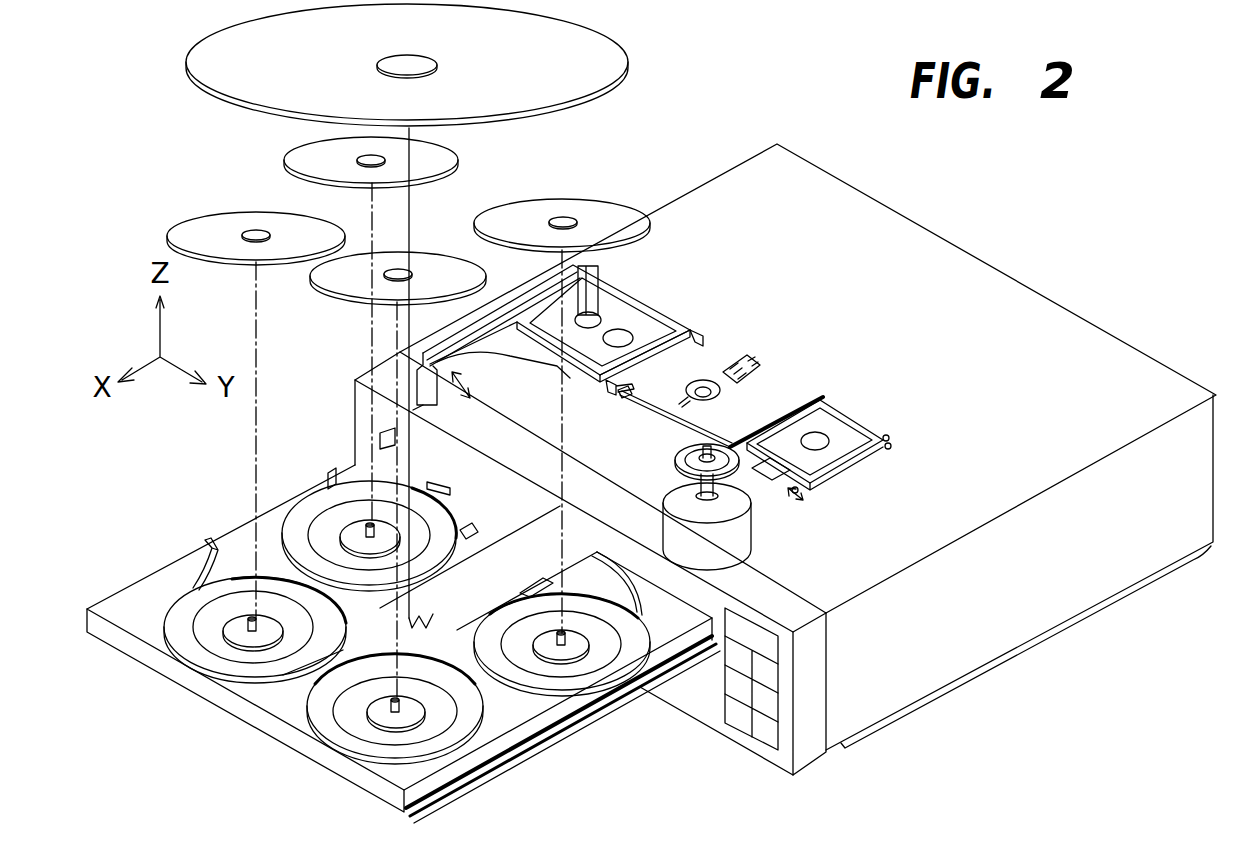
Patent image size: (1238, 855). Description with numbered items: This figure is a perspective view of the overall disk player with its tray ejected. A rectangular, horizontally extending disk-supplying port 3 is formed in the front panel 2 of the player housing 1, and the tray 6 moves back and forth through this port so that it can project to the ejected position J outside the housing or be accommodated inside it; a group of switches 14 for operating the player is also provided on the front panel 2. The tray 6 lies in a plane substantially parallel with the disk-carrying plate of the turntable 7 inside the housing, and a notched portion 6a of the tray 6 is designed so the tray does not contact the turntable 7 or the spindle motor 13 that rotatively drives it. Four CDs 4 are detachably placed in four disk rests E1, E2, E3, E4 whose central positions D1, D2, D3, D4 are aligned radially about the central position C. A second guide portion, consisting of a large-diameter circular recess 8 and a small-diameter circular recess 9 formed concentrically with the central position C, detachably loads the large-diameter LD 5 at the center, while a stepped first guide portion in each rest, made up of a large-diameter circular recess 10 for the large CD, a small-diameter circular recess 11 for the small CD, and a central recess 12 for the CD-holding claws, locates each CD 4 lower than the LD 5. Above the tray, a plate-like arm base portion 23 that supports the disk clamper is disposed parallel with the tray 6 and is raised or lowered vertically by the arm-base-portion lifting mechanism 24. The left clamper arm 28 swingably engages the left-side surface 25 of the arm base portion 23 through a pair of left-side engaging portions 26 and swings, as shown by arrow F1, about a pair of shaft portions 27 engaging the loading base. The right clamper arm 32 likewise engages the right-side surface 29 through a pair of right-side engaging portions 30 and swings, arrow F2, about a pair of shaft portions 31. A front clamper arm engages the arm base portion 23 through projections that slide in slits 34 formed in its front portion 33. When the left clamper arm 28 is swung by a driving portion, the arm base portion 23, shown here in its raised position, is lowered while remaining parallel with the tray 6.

The player housing 1 is at (1027, 627).
The front panel 2 is at (690, 708).
The disk-supplying port 3 is at (388, 428).
The CD 4 is at (200, 227).
The LD 5 is at (598, 88).
The tray 6 is at (378, 795).
The notched portion 6a is at (498, 580).
The turntable 7 is at (688, 470).
The large-diameter circular recess 8 is at (210, 557).
The small-diameter circular recess 9 is at (545, 735).
The large-diameter circular recess 10 is at (165, 625).
The small-diameter circular recess 11 is at (178, 624).
The central recess 12 is at (228, 632).
The spindle motor 13 is at (743, 545).
The group of switches 14 is at (767, 739).
The arm base portion 23 is at (750, 366).
The arm-base-portion lifting mechanism 24 is at (652, 275).
The left-side surface 25 is at (663, 353).
The left-side engaging portions 26 is at (712, 326).
The shaft portions 27 is at (584, 317).
The left clamper arm 28 is at (520, 356).
The right-side surface 29 is at (835, 430).
The right-side engaging portions 30 is at (832, 388).
The shaft portions 31 is at (889, 446).
The right clamper arm 32 is at (886, 438).
The front portion 33 is at (688, 443).
The slits 34 is at (622, 397).
The central position C is at (432, 378).
The ejected position J is at (513, 768).
The central position D1 is at (362, 532).
The central position D2 is at (252, 620).
The central position D3 is at (392, 705).
The central position D4 is at (565, 640).
The disk rest E1 is at (458, 483).
The disk rest E2 is at (290, 620).
The disk rest E3 is at (432, 715).
The disk rest E4 is at (643, 623).
The arrow F1 is at (472, 383).
The arrow F2 is at (806, 494).